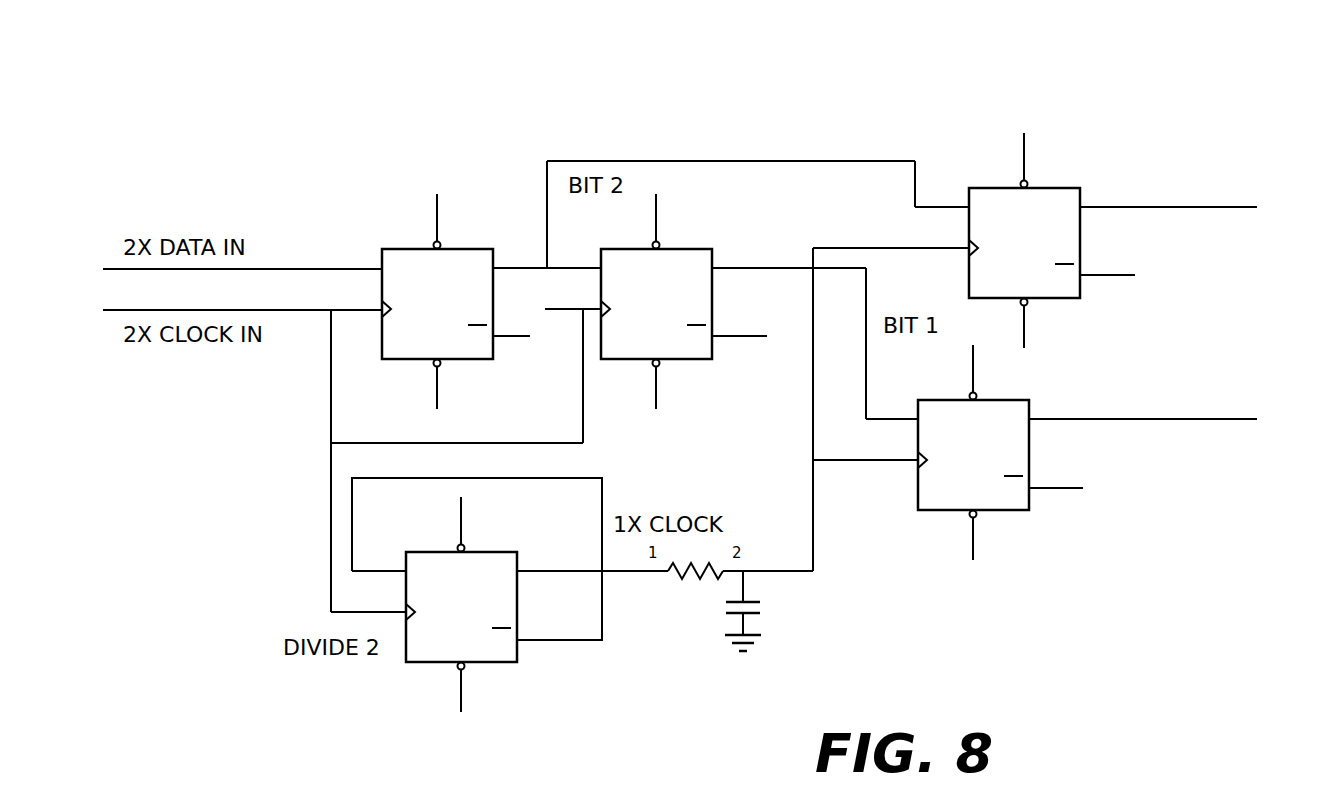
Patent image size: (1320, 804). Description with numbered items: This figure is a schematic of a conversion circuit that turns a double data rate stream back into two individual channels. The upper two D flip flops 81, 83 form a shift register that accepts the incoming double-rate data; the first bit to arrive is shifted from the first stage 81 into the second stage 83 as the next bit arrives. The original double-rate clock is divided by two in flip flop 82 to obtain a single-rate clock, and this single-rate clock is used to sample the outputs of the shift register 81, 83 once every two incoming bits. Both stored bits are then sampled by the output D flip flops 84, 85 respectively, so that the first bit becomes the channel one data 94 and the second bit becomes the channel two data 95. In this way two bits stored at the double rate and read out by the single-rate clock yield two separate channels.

The D flip flop 81 is at (393, 248).
The flip flop 82 is at (488, 665).
The D flip flop 83 is at (683, 249).
The output D flip flop 84 is at (1000, 507).
The output D flip flop 85 is at (1047, 190).
The channel one data 94 is at (1225, 419).
The channel two data 95 is at (1193, 207).